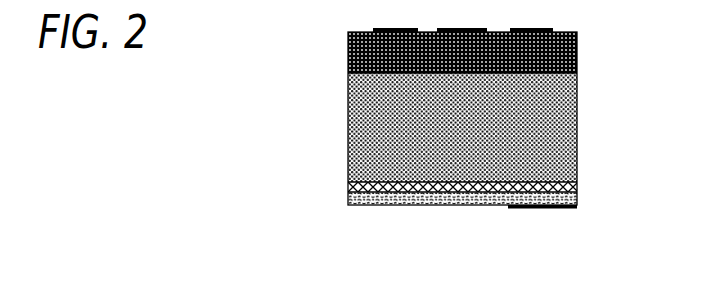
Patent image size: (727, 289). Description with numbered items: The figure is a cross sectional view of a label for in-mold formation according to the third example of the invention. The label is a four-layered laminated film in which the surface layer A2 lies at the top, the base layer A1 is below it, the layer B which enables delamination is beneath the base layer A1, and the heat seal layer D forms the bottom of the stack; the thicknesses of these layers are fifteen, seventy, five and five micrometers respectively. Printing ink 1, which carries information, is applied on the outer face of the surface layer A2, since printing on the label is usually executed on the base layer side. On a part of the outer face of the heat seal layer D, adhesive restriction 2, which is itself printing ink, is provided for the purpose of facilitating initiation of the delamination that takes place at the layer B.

The printing ink 1 is at (567, 30).
The surface layer A2 is at (577, 55).
The base layer A1 is at (562, 125).
The layer which enables delamination B is at (577, 192).
The heat seal layer D is at (577, 202).
The adhesive restriction 2 is at (565, 209).